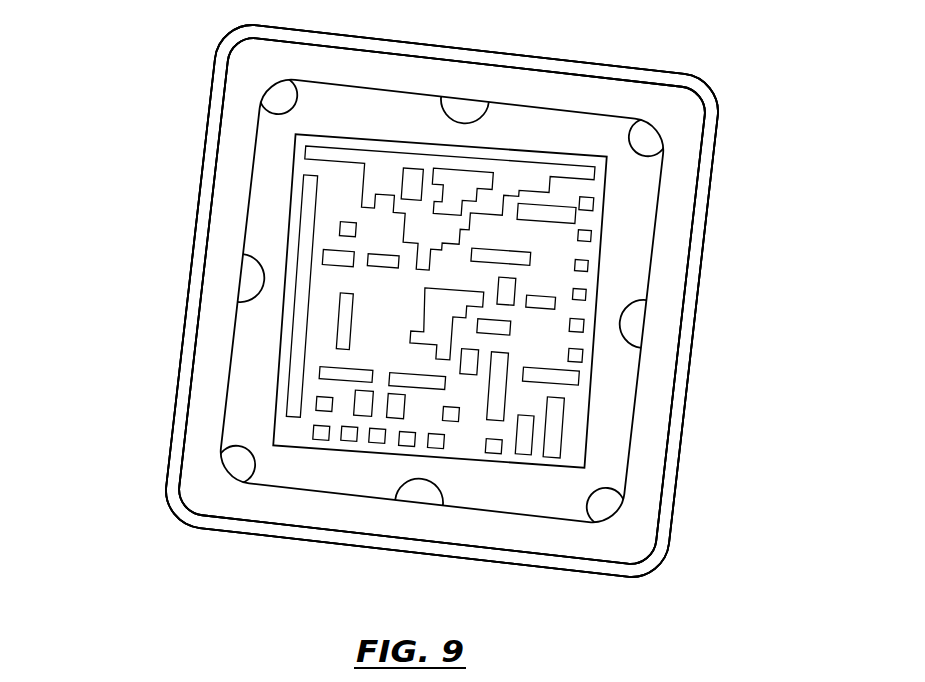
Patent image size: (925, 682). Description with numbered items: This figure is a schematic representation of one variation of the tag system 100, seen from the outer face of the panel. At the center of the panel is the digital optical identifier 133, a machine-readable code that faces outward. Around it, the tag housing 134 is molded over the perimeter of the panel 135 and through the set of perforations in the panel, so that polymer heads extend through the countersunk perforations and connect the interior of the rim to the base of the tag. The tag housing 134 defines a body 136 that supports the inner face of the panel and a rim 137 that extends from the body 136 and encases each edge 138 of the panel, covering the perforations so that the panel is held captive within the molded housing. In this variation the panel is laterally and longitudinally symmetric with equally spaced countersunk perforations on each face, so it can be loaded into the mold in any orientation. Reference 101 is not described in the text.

The tag system 100 is at (722, 42).
The package housing 101 is at (226, 37).
The digital optical identifier 133 is at (380, 160).
The tag housing 134 is at (698, 250).
The perimeter of the panel 135 is at (655, 399).
The body 136 is at (165, 532).
The rim 137 is at (205, 208).
The edge of the panel 138 is at (706, 170).